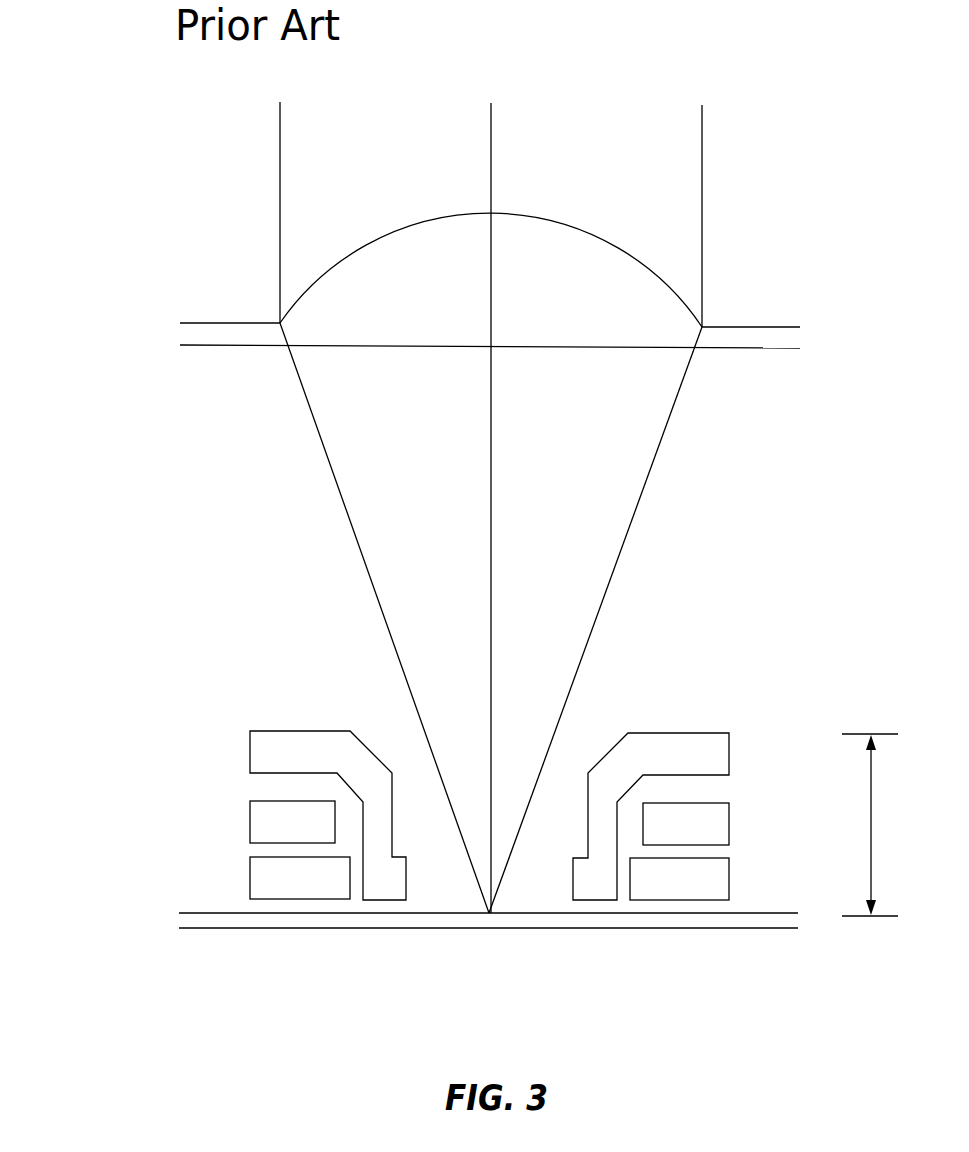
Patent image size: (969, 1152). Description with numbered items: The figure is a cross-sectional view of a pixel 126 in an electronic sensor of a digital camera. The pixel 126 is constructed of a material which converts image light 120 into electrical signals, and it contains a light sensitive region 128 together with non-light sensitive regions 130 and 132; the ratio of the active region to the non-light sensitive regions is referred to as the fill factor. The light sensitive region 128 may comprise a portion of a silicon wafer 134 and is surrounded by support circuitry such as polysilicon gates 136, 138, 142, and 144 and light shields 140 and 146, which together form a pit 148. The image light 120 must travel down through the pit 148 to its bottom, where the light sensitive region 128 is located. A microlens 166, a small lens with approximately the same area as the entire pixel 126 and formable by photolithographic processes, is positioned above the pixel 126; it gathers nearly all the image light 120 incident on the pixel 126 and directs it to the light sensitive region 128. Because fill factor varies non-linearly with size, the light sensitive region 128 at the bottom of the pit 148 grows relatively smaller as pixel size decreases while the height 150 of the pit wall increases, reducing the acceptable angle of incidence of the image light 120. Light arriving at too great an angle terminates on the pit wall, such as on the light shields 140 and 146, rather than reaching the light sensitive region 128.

The image light 120 is at (345, 512).
The pixel 126 is at (126, 802).
The light sensitive region 128 is at (487, 970).
The non-light sensitive region 130 is at (307, 970).
The non-light sensitive region 132 is at (672, 970).
The silicon wafer 134 is at (192, 930).
The polysilicon gate 136 is at (250, 826).
The polysilicon gate 138 is at (250, 878).
The light shield 140 is at (250, 748).
The polysilicon gate 142 is at (729, 825).
The polysilicon gate 144 is at (729, 880).
The light shield 146 is at (729, 748).
The pit 148 is at (392, 740).
The height of the pit wall 150 is at (870, 825).
The microlens 166 is at (368, 242).